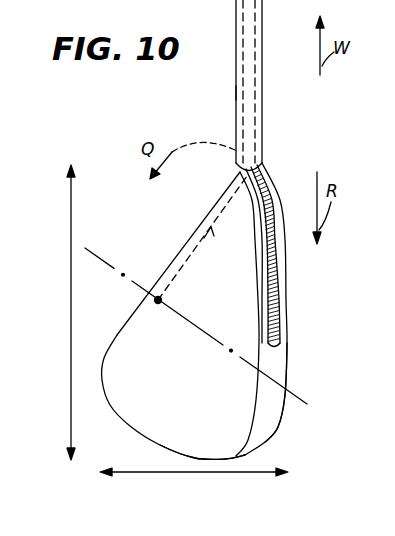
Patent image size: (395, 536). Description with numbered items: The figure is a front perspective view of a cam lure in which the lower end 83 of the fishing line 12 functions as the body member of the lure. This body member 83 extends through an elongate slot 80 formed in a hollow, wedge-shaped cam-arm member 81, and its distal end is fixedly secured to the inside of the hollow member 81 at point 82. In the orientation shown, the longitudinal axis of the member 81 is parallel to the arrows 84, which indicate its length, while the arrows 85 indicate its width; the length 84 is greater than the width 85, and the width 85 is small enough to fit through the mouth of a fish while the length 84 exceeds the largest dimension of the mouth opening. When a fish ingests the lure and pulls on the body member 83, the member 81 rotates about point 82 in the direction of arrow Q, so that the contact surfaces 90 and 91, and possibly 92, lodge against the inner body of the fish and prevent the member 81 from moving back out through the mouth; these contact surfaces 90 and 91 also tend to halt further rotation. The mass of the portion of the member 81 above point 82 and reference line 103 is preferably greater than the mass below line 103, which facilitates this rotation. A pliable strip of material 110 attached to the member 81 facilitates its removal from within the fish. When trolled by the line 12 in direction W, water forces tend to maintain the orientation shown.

The fishing line 12 is at (266, 52).
The pliable strip of material 110 is at (237, 89).
The lower end of fishing line 83 is at (263, 110).
The contact surface 91 is at (211, 191).
The elongate slot 80 is at (280, 313).
The contact surface 92 is at (103, 380).
The contact surface 90 is at (270, 393).
The hollow wedge shaped cam-arm member 81 is at (294, 422).
The reference line 103 is at (103, 257).
The attachment point 82 is at (154, 301).
The length arrows 84 is at (70, 327).
The width arrows 85 is at (212, 474).